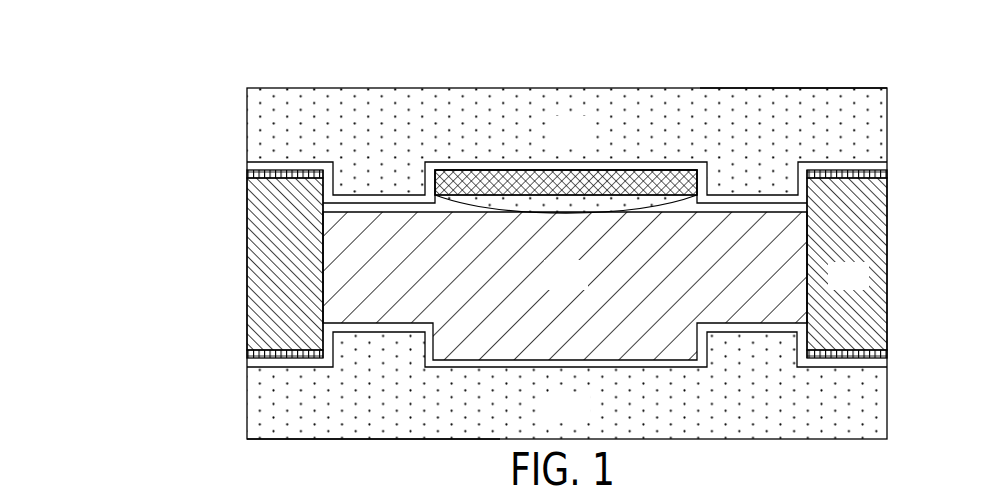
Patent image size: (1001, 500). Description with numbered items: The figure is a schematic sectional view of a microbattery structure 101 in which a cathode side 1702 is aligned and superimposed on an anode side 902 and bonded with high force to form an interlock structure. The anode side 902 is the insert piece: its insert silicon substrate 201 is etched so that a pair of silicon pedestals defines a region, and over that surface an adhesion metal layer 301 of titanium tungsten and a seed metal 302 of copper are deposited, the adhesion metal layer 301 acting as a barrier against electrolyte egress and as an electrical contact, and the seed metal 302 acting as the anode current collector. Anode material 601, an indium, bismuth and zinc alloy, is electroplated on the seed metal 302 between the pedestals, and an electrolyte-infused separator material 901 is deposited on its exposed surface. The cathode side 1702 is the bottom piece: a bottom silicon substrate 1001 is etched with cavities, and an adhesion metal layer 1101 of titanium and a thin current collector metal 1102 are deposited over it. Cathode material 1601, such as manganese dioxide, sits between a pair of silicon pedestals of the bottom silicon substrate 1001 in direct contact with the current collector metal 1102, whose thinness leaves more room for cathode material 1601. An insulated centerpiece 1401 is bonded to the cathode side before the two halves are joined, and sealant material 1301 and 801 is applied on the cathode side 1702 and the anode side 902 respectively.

The microbattery structure 101 is at (200, 50).
The insert silicon substrate 201 is at (584, 143).
The adhesion metal layer 301 is at (250, 162).
The seed metal 302 is at (250, 172).
The anode material 601 is at (466, 182).
The sealant material 801 is at (886, 176).
The electrolyte-infused separator material 901 is at (622, 200).
The anode side 902 is at (831, 79).
The bottom silicon substrate 1001 is at (585, 418).
The adhesion metal layer 1101 is at (252, 364).
The current collector metal 1102 is at (254, 354).
The sealant material 1301 is at (886, 353).
The insulated centerpiece 1401 is at (865, 287).
The cathode material 1601 is at (583, 287).
The cathode side 1702 is at (361, 456).